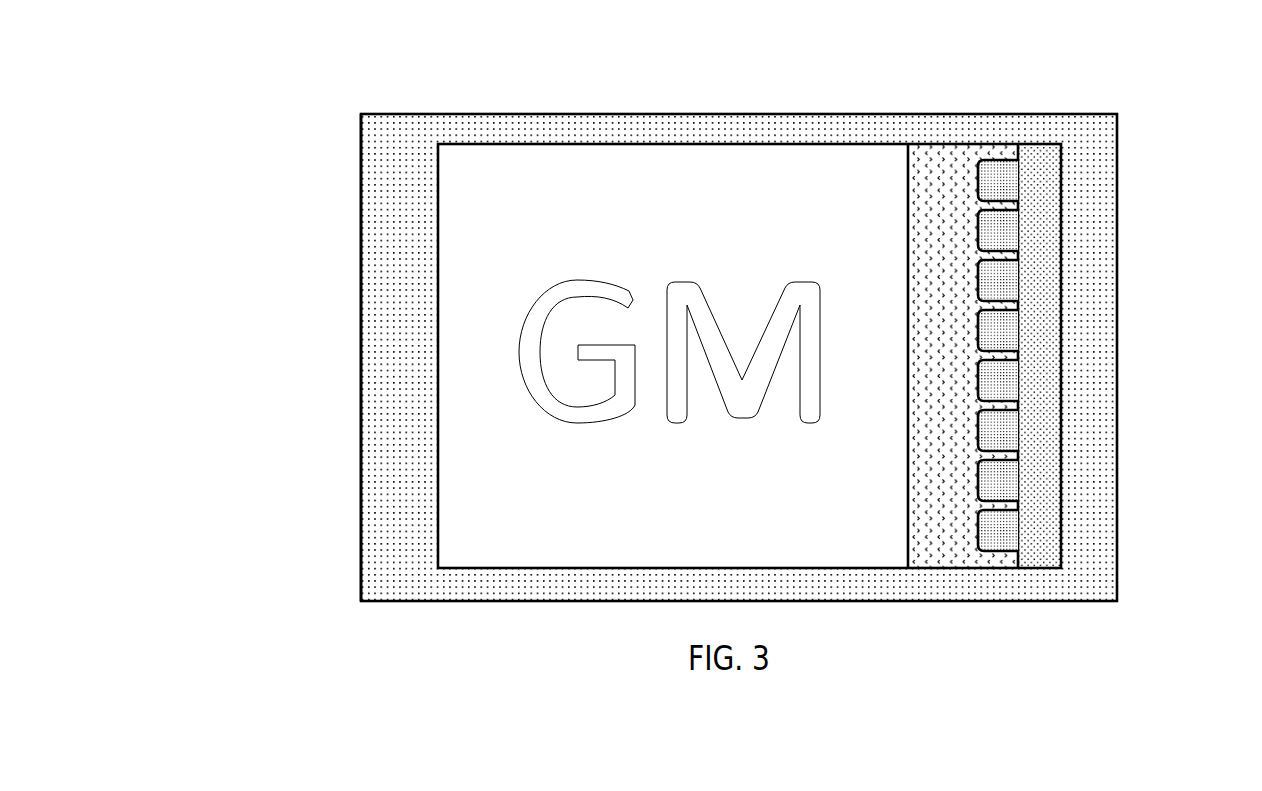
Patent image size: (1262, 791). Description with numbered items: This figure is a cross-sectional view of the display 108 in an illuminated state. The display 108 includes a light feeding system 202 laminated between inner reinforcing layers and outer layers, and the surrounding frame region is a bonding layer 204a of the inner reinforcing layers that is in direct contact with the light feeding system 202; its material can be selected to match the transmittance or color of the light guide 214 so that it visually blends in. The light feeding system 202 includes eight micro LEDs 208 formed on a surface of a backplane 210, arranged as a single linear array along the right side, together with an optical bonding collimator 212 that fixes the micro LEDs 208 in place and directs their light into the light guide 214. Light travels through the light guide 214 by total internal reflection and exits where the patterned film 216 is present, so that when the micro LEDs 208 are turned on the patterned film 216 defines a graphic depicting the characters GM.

The display 108 is at (224, 68).
The light feeding system 202 is at (1021, 127).
The bonding layer 204a is at (361, 311).
The micro LEDs 208 is at (1022, 330).
The backplane 210 is at (1048, 247).
The optical bonding collimator 212 is at (933, 168).
The light guide 214 is at (586, 167).
The patterned film 216 is at (535, 383).